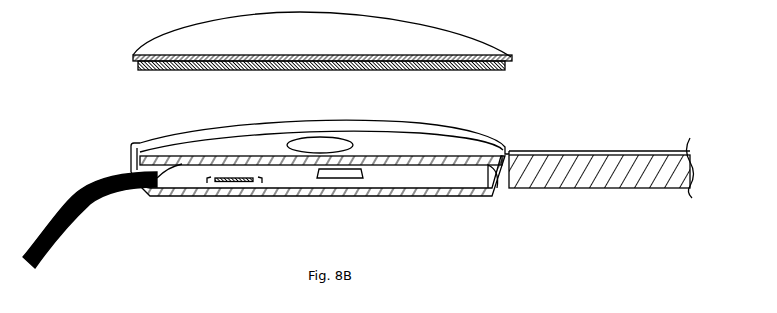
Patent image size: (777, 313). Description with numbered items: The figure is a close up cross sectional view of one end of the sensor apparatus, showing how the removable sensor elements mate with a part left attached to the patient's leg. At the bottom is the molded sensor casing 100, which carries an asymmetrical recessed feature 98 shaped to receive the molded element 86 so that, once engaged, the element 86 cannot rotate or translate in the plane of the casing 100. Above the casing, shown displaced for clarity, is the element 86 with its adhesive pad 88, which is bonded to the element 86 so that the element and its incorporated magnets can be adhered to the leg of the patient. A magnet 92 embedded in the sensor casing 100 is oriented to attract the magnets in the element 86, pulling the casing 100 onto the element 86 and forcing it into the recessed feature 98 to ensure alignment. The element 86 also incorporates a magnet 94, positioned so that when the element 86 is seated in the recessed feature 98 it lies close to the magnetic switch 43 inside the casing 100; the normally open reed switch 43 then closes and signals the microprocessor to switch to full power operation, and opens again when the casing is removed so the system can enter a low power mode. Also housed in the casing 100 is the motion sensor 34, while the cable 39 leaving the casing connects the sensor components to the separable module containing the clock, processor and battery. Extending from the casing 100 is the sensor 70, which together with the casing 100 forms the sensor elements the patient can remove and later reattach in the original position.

The adhesive pad 88 is at (481, 48).
The element 86 is at (135, 68).
The magnet 94 is at (251, 72).
The magnet 92 is at (358, 141).
The recessed feature 98 is at (178, 156).
The sensor casing 100 is at (413, 189).
The motion sensor 34 is at (340, 179).
The magnetic switch 43 is at (221, 181).
The cable 39 is at (94, 203).
The sensor 70 is at (549, 176).